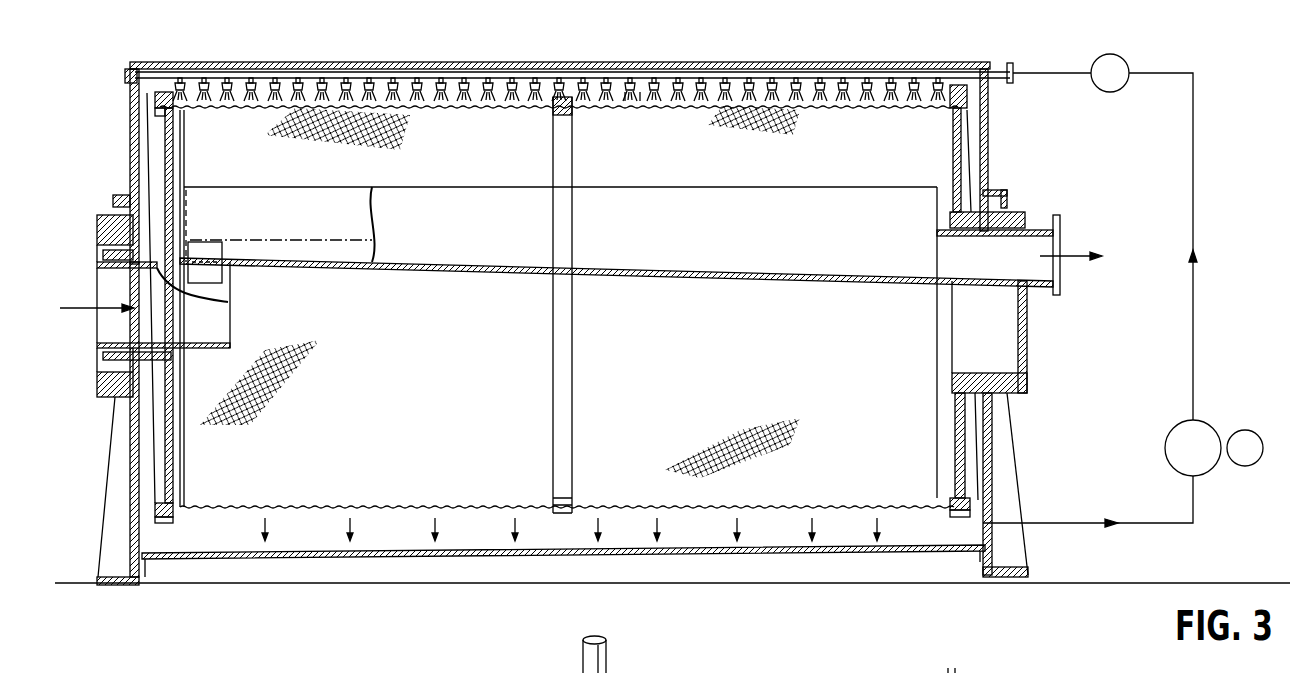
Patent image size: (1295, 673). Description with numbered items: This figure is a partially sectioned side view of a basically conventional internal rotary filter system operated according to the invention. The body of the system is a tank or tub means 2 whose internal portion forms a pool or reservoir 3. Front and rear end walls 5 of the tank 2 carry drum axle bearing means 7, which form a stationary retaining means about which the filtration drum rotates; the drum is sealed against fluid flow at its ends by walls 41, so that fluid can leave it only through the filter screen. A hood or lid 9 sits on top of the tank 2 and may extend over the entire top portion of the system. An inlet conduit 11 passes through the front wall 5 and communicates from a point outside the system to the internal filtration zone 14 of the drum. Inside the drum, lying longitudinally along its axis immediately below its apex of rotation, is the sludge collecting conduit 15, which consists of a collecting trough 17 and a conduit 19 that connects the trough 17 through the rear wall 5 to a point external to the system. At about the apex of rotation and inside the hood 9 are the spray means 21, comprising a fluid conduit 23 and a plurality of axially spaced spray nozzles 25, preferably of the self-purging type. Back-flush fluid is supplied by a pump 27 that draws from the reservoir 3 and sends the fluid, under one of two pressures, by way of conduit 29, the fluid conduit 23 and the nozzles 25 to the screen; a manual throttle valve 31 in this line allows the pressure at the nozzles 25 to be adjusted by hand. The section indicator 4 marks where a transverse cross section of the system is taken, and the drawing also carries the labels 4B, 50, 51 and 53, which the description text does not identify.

The tank or tub means 2 is at (132, 470).
The pool or reservoir 3 is at (318, 545).
The section line 4- 4 is at (598, 35).
The screen 4B is at (848, 108).
The end walls 5 is at (130, 170).
The drum axle bearing means 7 is at (97, 252).
The hood or lid 9 is at (940, 63).
The inlet conduit 11 is at (143, 301).
The internal filtration zone 14 is at (378, 392).
The sludge collecting conduit 15 is at (636, 186).
The collecting trough 17 is at (682, 234).
The conduit 19 is at (988, 270).
The spray means 21 is at (806, 76).
The fluid conduit 23 is at (712, 72).
The spray nozzles 25 is at (681, 95).
The pump 27 is at (1222, 425).
The conduit 29 is at (1195, 225).
The manual throttle valve 31 is at (1127, 68).
The walls 41 is at (173, 158).
The element 50 is at (866, 658).
The element 51 is at (610, 668).
The element 53 is at (498, 672).